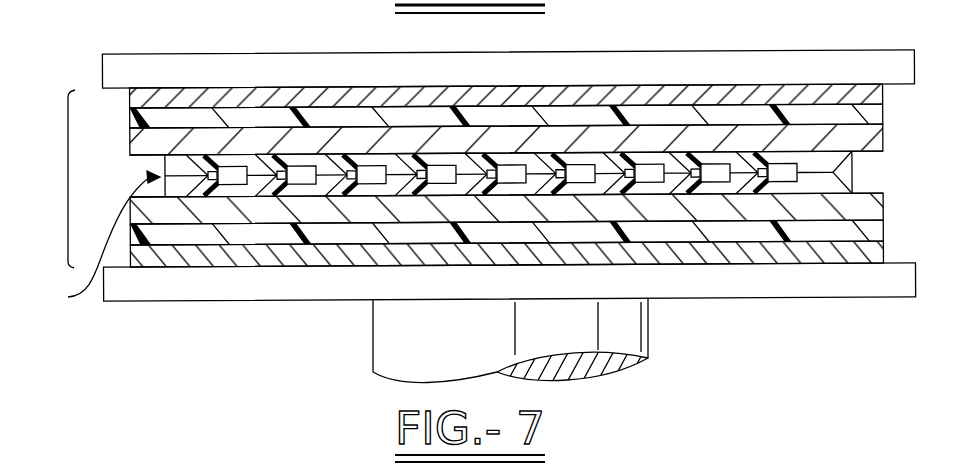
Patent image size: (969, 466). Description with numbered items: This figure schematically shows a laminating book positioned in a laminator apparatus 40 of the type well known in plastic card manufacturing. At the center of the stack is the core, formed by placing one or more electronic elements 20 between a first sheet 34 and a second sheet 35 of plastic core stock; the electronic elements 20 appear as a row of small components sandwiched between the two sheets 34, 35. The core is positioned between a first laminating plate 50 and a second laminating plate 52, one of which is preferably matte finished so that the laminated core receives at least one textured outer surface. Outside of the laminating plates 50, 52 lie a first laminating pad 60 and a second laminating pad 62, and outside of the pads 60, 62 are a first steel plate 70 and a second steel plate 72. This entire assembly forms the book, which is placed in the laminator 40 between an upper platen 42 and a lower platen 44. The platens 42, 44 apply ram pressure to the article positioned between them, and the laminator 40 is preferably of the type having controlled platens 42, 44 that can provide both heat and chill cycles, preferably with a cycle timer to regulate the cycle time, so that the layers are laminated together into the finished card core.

The electronic element 20 is at (348, 174).
The first sheet of plastic core stock 34 is at (852, 160).
The second sheet of plastic core stock 35 is at (68, 176).
The laminator apparatus 40 is at (313, 342).
The upper platen 42 is at (145, 54).
The lower platen 44 is at (148, 302).
The first laminating plate 50 is at (807, 132).
The second laminating plate 52 is at (815, 213).
The first laminating pad 60 is at (727, 113).
The second laminating pad 62 is at (735, 235).
The first steel plate 70 is at (272, 93).
The second steel plate 72 is at (270, 263).